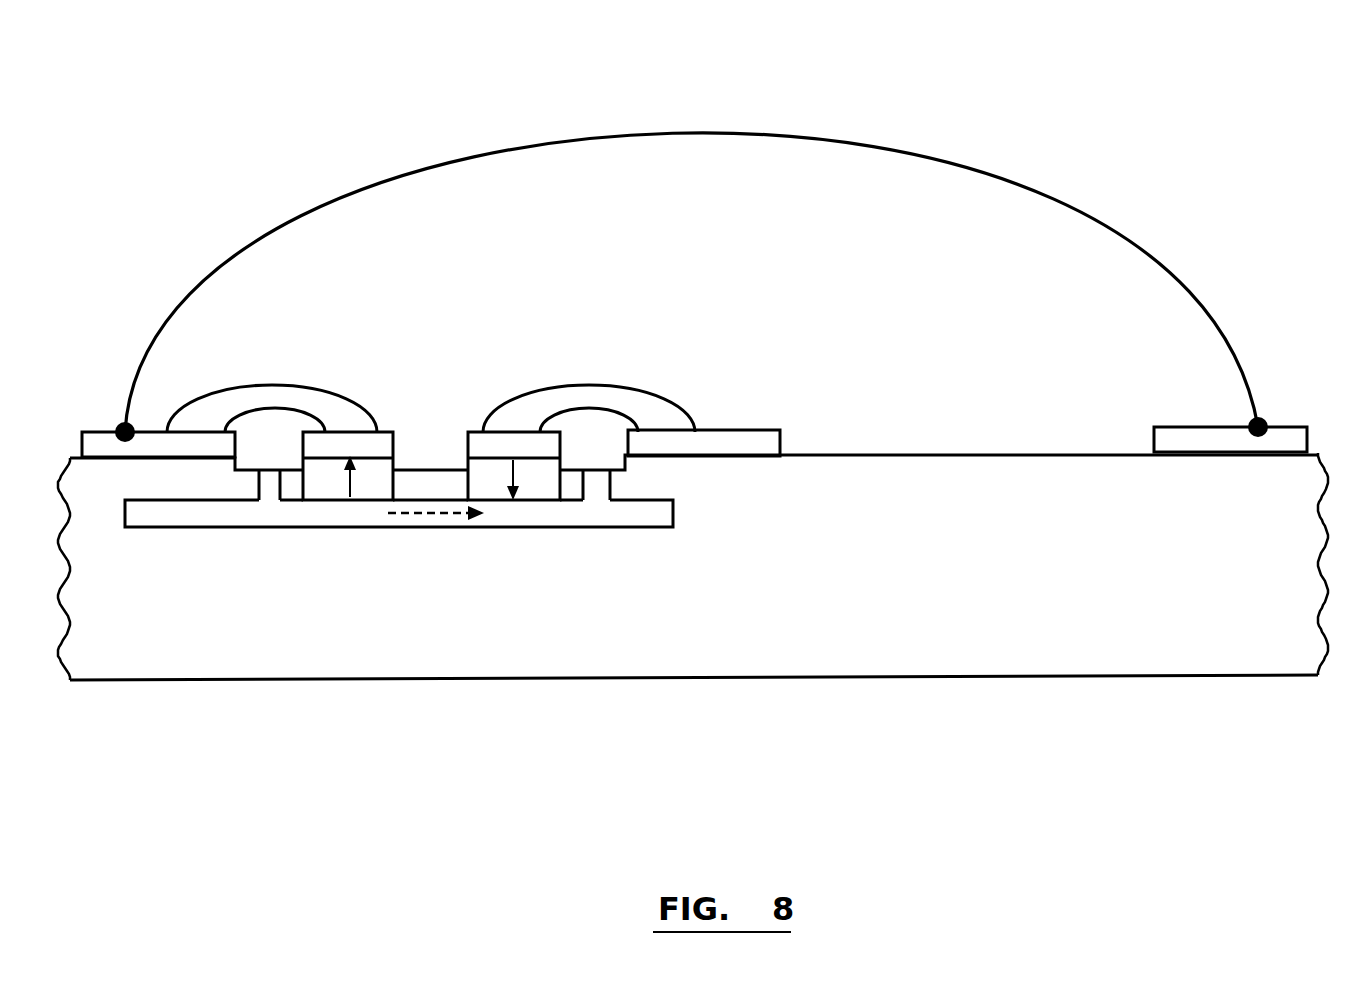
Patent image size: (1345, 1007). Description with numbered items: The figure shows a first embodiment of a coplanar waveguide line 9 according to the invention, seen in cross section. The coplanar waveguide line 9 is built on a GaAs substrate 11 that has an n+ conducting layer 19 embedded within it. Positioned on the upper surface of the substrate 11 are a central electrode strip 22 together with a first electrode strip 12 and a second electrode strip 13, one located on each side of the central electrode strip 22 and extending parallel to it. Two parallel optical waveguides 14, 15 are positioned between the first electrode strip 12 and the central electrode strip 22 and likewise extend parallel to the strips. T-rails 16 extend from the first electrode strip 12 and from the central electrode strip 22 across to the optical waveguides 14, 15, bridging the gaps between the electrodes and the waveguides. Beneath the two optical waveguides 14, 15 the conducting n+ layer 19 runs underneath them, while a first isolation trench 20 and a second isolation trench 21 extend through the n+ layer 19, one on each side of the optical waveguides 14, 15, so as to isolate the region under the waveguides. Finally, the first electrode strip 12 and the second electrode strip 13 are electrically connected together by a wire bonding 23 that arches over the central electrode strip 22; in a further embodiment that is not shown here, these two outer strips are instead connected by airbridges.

The coplanar waveguide line 9 is at (1070, 178).
The GaAs substrate 11 is at (863, 632).
The first electrode strip 12 is at (100, 437).
The second electrode strip 13 is at (1282, 440).
The optical waveguide 14 is at (323, 490).
The optical waveguide 15 is at (532, 487).
The T-rails 16 is at (285, 378).
The n+ conducting layer 19 is at (428, 527).
The first isolation trench 20 is at (270, 495).
The second isolation trench 21 is at (603, 495).
The central electrode strip 22 is at (745, 437).
The wire bonding 23 is at (947, 163).